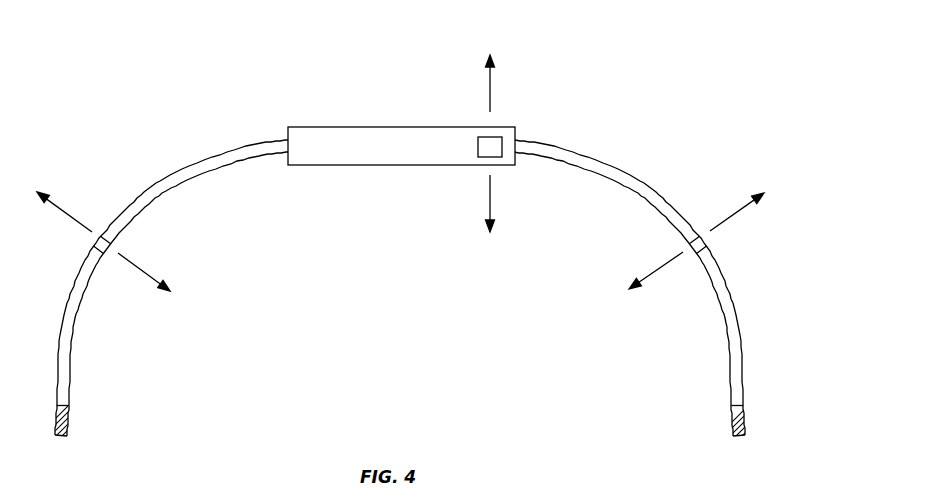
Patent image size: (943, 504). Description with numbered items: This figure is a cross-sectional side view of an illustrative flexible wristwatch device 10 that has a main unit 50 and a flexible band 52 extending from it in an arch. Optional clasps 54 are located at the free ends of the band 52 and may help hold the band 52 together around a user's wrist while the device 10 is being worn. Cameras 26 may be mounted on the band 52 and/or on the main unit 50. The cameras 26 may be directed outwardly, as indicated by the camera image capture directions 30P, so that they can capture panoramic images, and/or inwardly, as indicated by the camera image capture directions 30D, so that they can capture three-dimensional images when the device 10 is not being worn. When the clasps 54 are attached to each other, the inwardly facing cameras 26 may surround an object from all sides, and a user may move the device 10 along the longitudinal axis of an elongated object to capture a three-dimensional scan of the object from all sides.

The wristwatch device 10 is at (424, 245).
The cameras 26 is at (477, 143).
The camera image capture directions 30P is at (63, 208).
The camera image capture directions 30D is at (140, 272).
The main unit 50 is at (358, 166).
The flexible band 52 is at (66, 348).
The clasps 54 is at (69, 418).